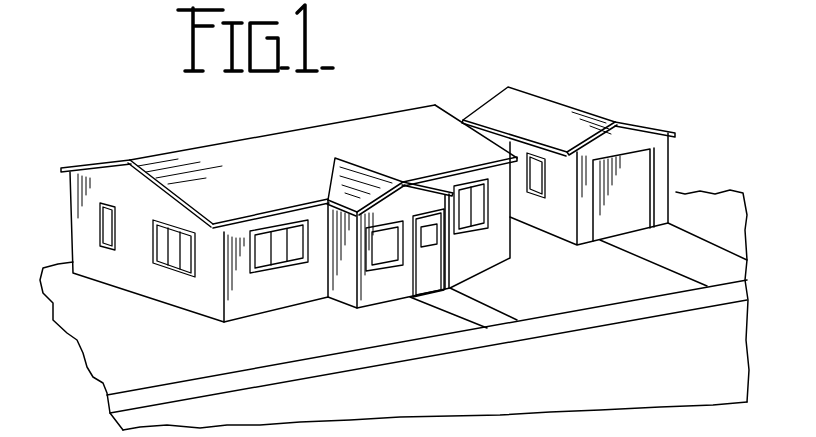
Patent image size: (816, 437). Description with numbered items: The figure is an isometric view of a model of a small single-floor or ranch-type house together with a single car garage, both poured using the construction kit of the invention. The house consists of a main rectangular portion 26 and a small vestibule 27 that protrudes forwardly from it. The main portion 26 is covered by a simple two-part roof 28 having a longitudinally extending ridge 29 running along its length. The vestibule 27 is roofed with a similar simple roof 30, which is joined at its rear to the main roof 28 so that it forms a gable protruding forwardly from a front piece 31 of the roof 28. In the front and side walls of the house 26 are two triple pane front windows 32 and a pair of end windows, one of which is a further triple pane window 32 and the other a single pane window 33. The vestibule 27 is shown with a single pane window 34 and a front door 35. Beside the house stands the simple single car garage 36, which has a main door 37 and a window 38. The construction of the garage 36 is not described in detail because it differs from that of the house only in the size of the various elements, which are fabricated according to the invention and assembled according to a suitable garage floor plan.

The main rectangular portion 26 is at (146, 303).
The vestibule 27 is at (455, 280).
The roof 28 is at (233, 150).
The ridge 29 is at (333, 123).
The roof 30 is at (363, 177).
The front piece 31 is at (285, 143).
The triple pane window 32 is at (153, 273).
The single pane window 33 is at (94, 223).
The single pane window 34 is at (390, 271).
The front door 35 is at (431, 257).
The garage 36 is at (678, 161).
The main door 37 is at (640, 195).
The window 38 is at (537, 166).